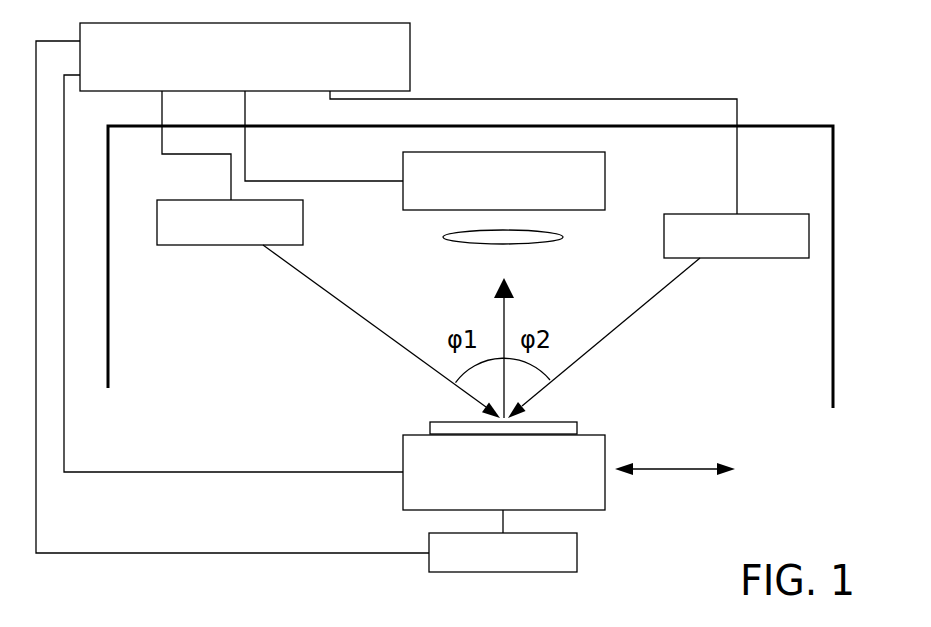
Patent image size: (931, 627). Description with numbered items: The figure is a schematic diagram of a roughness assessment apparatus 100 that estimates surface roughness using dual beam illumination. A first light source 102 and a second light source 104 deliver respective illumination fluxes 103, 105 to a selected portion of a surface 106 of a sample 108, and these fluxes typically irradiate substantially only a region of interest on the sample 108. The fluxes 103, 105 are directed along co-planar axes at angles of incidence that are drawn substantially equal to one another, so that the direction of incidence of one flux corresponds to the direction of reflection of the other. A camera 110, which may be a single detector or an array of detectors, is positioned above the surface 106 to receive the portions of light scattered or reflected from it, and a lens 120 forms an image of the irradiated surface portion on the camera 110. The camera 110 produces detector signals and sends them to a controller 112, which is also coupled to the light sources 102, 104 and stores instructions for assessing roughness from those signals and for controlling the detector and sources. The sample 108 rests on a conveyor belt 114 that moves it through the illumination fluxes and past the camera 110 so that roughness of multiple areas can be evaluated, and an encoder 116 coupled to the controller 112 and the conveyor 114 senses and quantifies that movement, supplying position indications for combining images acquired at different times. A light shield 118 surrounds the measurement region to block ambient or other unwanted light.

The roughness assessment apparatus 100 is at (766, 444).
The first light source 102 is at (231, 245).
The first illumination flux 103 is at (352, 305).
The second light source 104 is at (735, 258).
The second illumination flux 105 is at (638, 313).
The surface 106 is at (542, 420).
The sample 108 is at (430, 430).
The camera 110 is at (605, 195).
The controller 112 is at (410, 57).
The conveyor belt 114 is at (605, 490).
The encoder 116 is at (577, 552).
The light shield 118 is at (763, 124).
The lens 120 is at (505, 244).